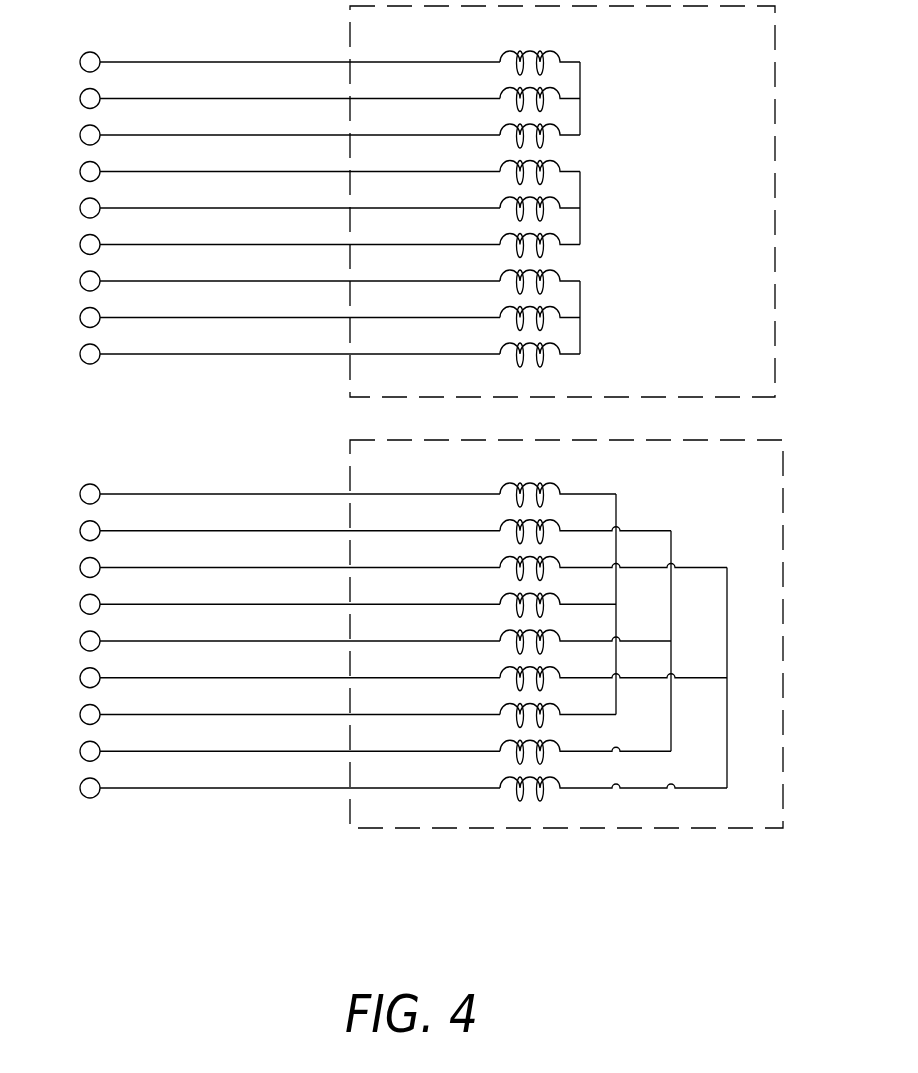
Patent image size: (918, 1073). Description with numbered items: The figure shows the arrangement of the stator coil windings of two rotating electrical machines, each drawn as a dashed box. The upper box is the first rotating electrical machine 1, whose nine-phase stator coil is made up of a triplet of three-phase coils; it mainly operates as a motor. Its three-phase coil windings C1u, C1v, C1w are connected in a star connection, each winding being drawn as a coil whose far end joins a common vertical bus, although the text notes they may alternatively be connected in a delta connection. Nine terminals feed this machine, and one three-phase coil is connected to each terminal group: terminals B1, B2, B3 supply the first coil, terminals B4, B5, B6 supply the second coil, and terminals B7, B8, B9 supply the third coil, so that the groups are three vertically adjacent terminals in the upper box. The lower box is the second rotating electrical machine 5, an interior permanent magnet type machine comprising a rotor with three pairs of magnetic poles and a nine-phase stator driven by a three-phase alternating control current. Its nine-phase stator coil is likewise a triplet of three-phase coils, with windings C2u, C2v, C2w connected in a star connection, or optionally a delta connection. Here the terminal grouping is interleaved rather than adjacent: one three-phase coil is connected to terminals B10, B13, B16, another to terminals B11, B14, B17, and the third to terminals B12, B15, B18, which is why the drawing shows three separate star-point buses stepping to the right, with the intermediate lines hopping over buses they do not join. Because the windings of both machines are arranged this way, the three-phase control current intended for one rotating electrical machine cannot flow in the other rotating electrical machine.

The first rotating electrical machine 1 is at (745, 77).
The second rotating electrical machine 5 is at (747, 498).
The terminal B1 is at (266, 63).
The terminal B2 is at (266, 100).
The terminal B3 is at (266, 136).
The terminal B4 is at (266, 173).
The terminal B5 is at (266, 209).
The terminal B6 is at (266, 246).
The terminal B7 is at (266, 282).
The terminal B8 is at (266, 319).
The terminal B9 is at (266, 355).
The terminal B10 is at (263, 495).
The terminal B11 is at (263, 532).
The terminal B12 is at (263, 569).
The terminal B13 is at (263, 605).
The terminal B14 is at (263, 642).
The terminal B15 is at (263, 679).
The terminal B16 is at (263, 716).
The terminal B17 is at (263, 752).
The terminal B18 is at (263, 789).
The three-phase coil winding C1u is at (564, 172).
The three-phase coil winding C1v is at (564, 209).
The three-phase coil winding C1w is at (565, 245).
The three-phase coil winding C2u is at (613, 523).
The three-phase coil winding C2v is at (613, 633).
The three-phase coil winding C2w is at (613, 743).